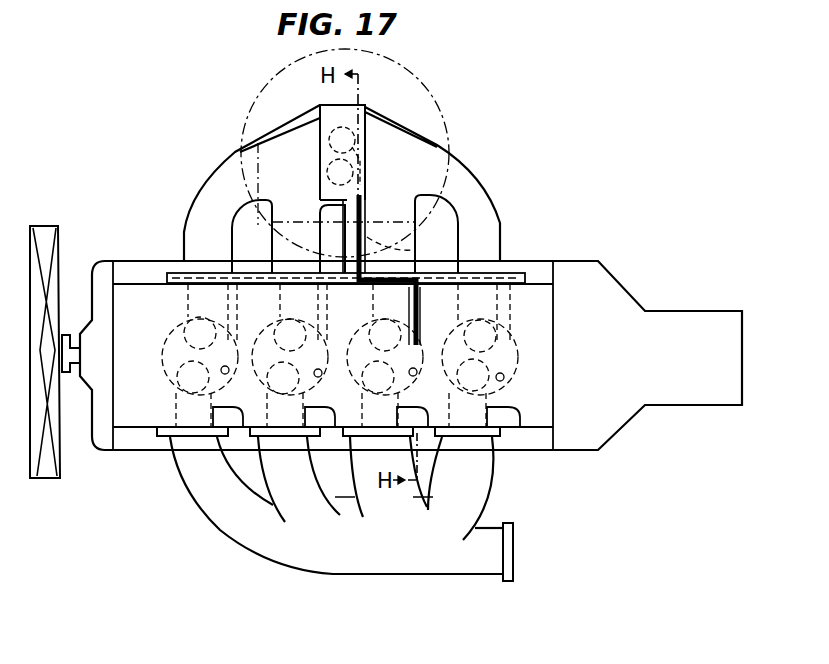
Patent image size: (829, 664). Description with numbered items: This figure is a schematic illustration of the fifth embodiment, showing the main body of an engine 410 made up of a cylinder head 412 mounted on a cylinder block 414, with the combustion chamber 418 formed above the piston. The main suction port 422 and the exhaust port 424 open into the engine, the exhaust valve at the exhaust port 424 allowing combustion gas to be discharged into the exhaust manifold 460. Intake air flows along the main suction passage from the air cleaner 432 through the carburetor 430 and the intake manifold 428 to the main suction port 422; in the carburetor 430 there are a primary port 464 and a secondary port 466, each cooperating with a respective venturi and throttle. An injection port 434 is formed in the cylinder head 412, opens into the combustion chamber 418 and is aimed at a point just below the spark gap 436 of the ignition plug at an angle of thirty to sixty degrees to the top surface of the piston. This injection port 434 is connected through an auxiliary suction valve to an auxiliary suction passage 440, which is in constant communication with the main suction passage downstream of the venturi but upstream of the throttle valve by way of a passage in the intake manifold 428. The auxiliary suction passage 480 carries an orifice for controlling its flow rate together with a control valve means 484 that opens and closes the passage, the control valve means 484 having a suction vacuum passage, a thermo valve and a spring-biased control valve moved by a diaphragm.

The main body of an engine 410 is at (148, 200).
The cylinder head 412 is at (143, 420).
The cylinder block 414 is at (157, 452).
The combustion chamber 418 is at (233, 375).
The main suction port 422 is at (182, 308).
The exhaust port 424 is at (173, 403).
The intake manifold 428 is at (482, 195).
The carburetor 430 is at (357, 110).
The air cleaner 432 is at (438, 105).
The injection port 434 is at (188, 322).
The spark gap 436 is at (221, 370).
The auxiliary suction passage 440 is at (215, 300).
The exhaust manifold 460 is at (345, 565).
The primary port 464 is at (356, 135).
The secondary port 466 is at (327, 172).
The auxiliary suction passage 480 is at (358, 198).
The control valve means 484 is at (362, 206).